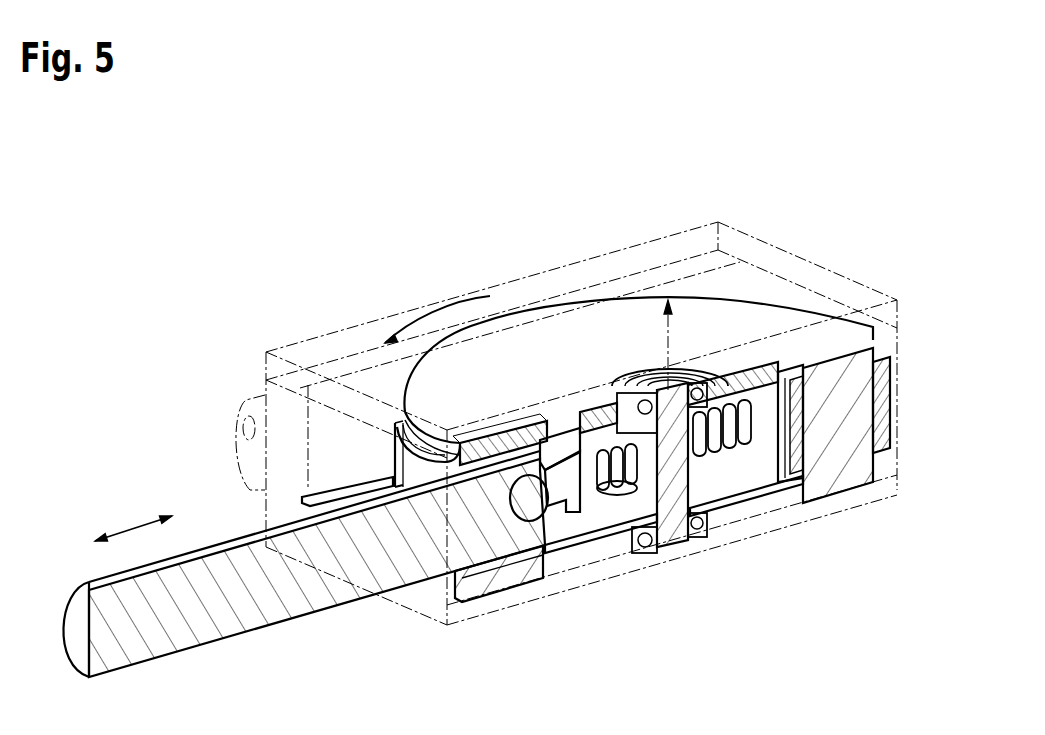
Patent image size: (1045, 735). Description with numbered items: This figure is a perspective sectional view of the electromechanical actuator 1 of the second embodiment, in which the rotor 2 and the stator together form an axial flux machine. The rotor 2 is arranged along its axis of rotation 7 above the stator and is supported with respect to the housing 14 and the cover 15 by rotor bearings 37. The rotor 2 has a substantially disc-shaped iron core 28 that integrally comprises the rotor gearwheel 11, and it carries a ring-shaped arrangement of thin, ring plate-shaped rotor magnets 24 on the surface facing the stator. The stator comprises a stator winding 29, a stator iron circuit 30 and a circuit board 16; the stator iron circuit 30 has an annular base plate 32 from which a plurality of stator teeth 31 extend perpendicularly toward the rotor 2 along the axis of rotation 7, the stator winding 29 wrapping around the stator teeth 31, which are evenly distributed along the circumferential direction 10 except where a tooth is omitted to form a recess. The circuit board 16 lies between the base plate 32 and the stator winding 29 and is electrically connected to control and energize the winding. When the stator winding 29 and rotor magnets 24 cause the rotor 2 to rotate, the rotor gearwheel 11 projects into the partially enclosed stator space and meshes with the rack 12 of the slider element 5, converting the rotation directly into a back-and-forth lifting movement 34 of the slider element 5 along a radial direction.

The actuator 1 is at (228, 243).
The rotor 2 is at (600, 410).
The slider element 5 is at (168, 650).
The axis of rotation 7 is at (667, 350).
The circumferential direction 10 is at (413, 315).
The rotor gearwheel 11 is at (633, 545).
The rack 12 is at (605, 520).
The housing 14 is at (430, 620).
The cover 15 is at (318, 338).
The circuit board 16 is at (748, 500).
The rotor magnets 24 is at (830, 345).
The iron core 28 is at (778, 325).
The stator winding 29 is at (912, 380).
The stator iron circuit 30 is at (859, 466).
The stator teeth 31 is at (848, 455).
The base plate 32 is at (516, 580).
The lifting movement 34 is at (130, 525).
The rotor bearings 37 is at (705, 375).